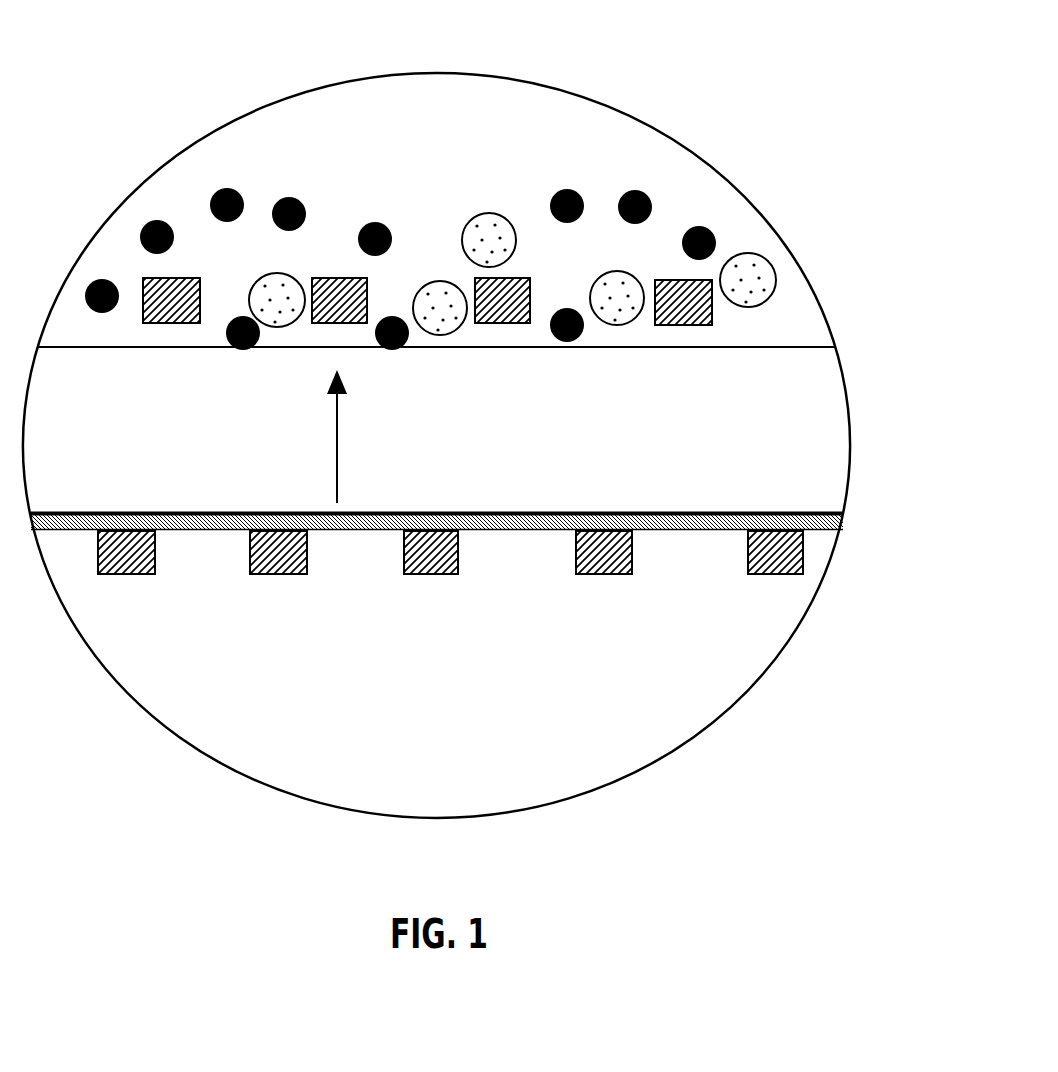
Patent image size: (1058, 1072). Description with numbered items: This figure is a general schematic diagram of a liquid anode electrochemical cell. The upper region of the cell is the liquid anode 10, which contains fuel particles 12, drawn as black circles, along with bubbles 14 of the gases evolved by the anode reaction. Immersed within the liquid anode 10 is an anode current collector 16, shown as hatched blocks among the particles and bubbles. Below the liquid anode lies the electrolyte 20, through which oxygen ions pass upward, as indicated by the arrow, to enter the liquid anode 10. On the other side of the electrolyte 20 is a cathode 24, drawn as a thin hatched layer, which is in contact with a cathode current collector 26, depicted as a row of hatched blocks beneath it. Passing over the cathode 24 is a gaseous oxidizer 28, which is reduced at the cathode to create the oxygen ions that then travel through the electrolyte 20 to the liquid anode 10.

The liquid anode 10 is at (530, 103).
The fuel particles 12 is at (633, 188).
The bubbles 14 is at (777, 282).
The anode current collector 16 is at (153, 278).
The electrolyte 20 is at (837, 453).
The cathode 24 is at (818, 537).
The cathode current collector 26 is at (775, 576).
The gaseous oxidizer 28 is at (676, 748).